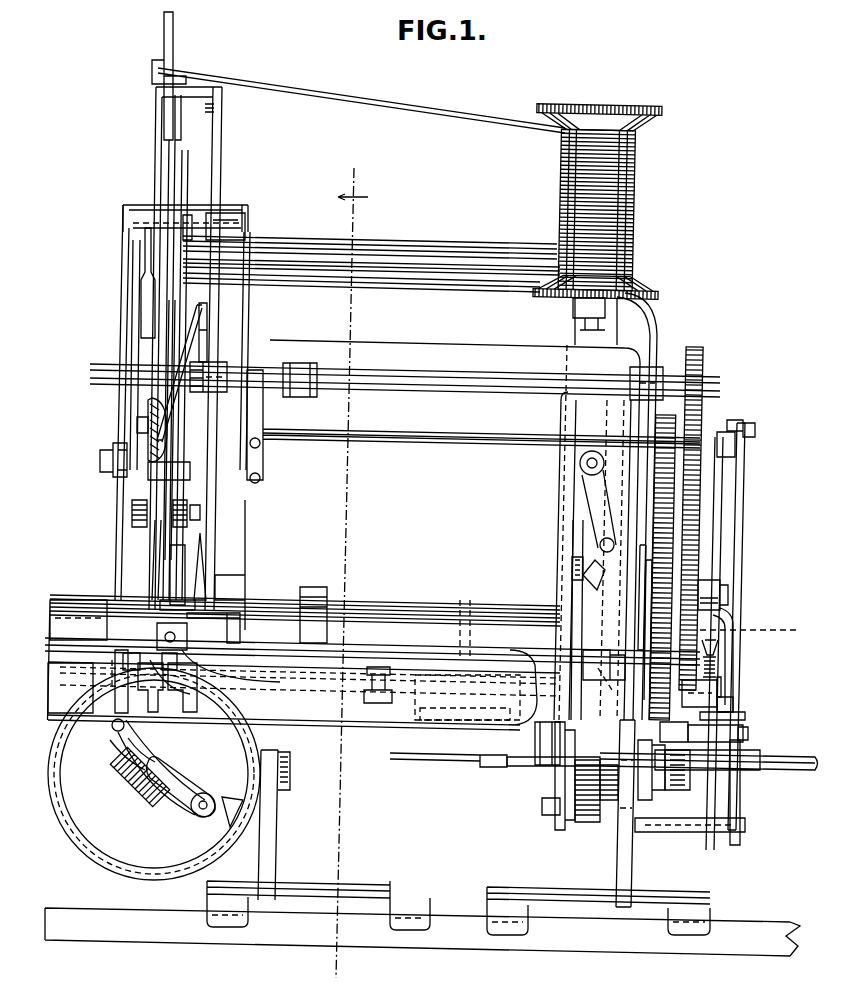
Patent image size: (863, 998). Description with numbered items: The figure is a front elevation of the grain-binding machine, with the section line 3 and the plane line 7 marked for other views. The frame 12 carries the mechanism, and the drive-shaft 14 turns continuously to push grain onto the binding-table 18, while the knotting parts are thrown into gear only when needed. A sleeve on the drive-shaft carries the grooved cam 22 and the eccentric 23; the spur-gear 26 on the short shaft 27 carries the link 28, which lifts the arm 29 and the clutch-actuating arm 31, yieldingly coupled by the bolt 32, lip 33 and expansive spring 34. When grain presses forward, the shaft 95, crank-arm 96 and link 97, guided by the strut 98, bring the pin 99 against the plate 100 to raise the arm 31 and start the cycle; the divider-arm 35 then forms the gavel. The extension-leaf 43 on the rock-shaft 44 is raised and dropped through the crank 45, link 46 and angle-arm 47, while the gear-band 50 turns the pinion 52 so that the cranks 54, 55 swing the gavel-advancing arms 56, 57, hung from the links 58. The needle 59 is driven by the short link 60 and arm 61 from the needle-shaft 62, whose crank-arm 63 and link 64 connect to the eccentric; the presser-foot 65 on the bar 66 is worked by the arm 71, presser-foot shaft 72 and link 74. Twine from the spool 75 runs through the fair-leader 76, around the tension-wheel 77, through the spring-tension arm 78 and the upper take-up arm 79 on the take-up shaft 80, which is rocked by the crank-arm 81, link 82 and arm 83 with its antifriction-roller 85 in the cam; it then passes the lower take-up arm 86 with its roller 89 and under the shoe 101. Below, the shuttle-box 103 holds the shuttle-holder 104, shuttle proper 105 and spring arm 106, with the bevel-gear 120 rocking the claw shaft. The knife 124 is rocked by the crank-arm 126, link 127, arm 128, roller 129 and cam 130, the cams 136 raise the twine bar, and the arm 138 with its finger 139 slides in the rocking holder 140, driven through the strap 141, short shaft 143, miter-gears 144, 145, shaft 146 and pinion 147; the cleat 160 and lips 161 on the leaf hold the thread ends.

The section line 3 is at (350, 572).
The section plane line 7 is at (415, 660).
The frame 12 is at (455, 530).
The drive-shaft 14 is at (755, 770).
The binding-table 18 is at (385, 622).
The grooved cam 22 is at (585, 822).
The eccentric 23 is at (610, 800).
The spur-gear 26 is at (675, 415).
The short revoluble shaft 27 is at (583, 540).
The link 28 is at (733, 650).
The arm 29 is at (733, 702).
The clutch-actuating arm 31 is at (722, 686).
The bolt 32 is at (720, 643).
The lip 33 is at (718, 663).
The expansive spring 34 is at (696, 689).
The divider-arm 35 is at (204, 565).
The extension-leaf 43 is at (310, 694).
The rock-shaft 44 is at (450, 640).
The crank 45 is at (595, 650).
The link 46 is at (652, 620).
The angle-arm 47 is at (646, 575).
The mutilated gear-band 50 is at (700, 535).
The mutilated pinion 52 is at (702, 365).
The crank 54 is at (275, 428).
The crank 55 is at (137, 421).
The gavel-advancing arm 56 is at (242, 500).
The gavel-advancing arm 57 is at (116, 495).
The links 58 is at (248, 222).
The needle 59 is at (152, 568).
The short link 60 is at (150, 335).
The arm 61 is at (141, 275).
The needle-shaft 62 is at (480, 298).
The crank-arm 63 is at (450, 368).
The link 64 is at (617, 330).
The presser-foot 65 is at (192, 573).
The bar 66 is at (170, 560).
The arm 71 is at (220, 240).
The presser-foot shaft 72 is at (455, 246).
The link 74 is at (657, 347).
The spool 75 is at (648, 122).
The fair-leader 76 is at (176, 66).
The tension-wheel 77 is at (166, 472).
The spring-tension arm 78 is at (113, 447).
The upper take-up arm 79 is at (192, 222).
The take-up shaft 80 is at (505, 265).
The crank-arm 81 is at (640, 212).
The link 82 is at (562, 790).
The arm 83 is at (560, 815).
The antifriction-roller 85 is at (575, 835).
The lower take-up arm 86 is at (207, 333).
The antifriction-roller 89 is at (212, 362).
The shaft 95 is at (710, 432).
The crank-arm 96 is at (535, 443).
The link 97 is at (745, 716).
The strut 98 is at (690, 800).
The pin 99 is at (735, 740).
The plate 100 is at (694, 728).
The shoe 101 is at (187, 505).
The shuttle-box 103 is at (130, 870).
The shuttle-holder 104 is at (178, 808).
The shuttle proper 105 is at (163, 761).
The arm 106 is at (190, 744).
The bevel-gear 120 is at (677, 790).
The knife 124 is at (230, 598).
The crank-arm 126 is at (190, 645).
The link 127 is at (480, 600).
The arm 128 is at (582, 480).
The antifriction-roller 129 is at (565, 563).
The cam 130 is at (572, 585).
The cams 136 is at (235, 678).
The arm 138 is at (348, 620).
The finger 139 is at (228, 620).
The rocking holder 140 is at (375, 685).
The strap 141 is at (555, 745).
The short shaft 143 is at (480, 762).
The miter-gear 144 is at (292, 690).
The miter-gear 145 is at (467, 697).
The shaft 146 is at (555, 766).
The pinion 147 is at (640, 790).
The cleat 160 is at (163, 680).
The lips 161 is at (151, 744).